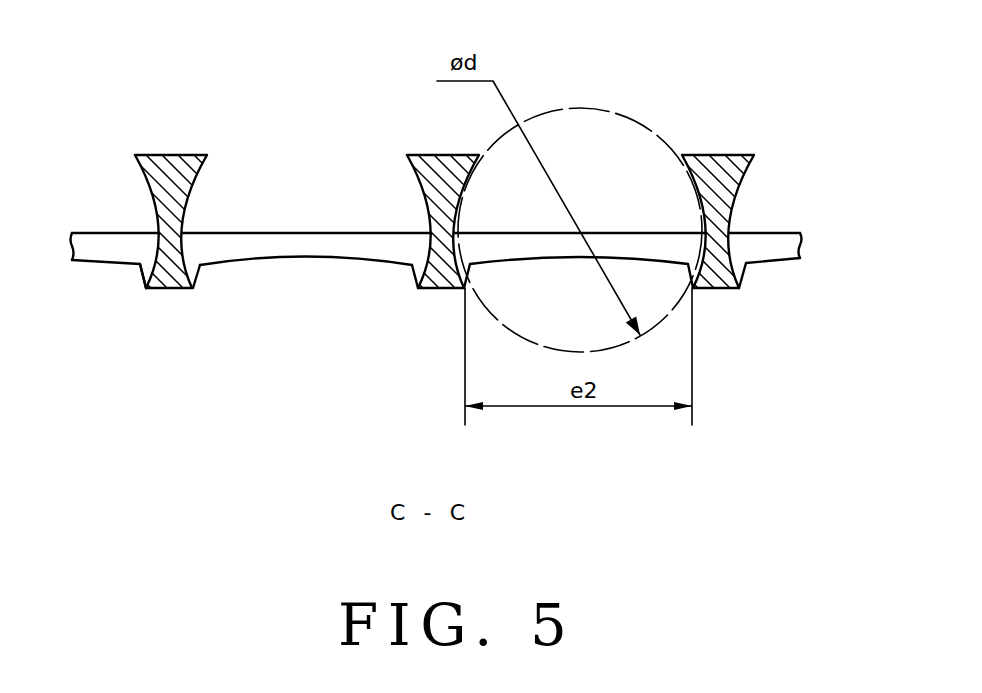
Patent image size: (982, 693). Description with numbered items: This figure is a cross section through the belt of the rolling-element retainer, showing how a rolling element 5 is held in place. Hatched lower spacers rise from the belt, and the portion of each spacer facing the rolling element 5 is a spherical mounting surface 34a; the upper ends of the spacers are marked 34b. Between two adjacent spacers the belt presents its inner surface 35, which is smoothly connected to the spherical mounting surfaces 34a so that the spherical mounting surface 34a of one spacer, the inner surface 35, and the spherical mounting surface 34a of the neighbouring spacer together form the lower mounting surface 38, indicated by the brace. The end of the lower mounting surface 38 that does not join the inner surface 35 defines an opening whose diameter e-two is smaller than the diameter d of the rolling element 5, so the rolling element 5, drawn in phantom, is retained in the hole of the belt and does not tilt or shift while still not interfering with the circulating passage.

The rolling element 5 is at (602, 110).
The spherical mounting surface 34a is at (198, 288).
The upper portion of tooth 34b is at (140, 172).
The inner surface 35 is at (305, 243).
The lower mounting surface 38 is at (428, 397).